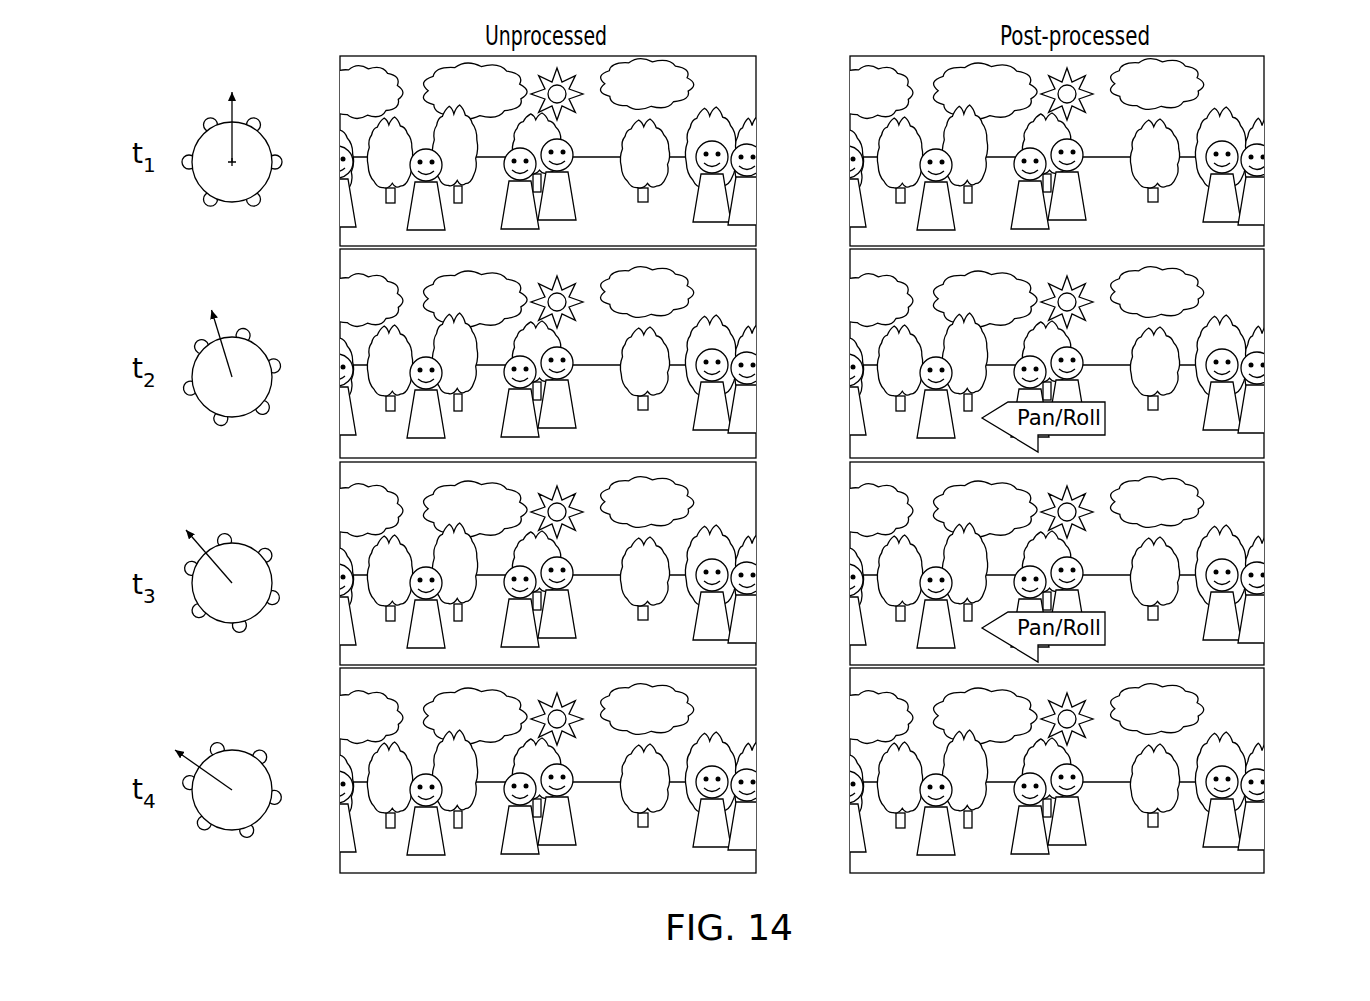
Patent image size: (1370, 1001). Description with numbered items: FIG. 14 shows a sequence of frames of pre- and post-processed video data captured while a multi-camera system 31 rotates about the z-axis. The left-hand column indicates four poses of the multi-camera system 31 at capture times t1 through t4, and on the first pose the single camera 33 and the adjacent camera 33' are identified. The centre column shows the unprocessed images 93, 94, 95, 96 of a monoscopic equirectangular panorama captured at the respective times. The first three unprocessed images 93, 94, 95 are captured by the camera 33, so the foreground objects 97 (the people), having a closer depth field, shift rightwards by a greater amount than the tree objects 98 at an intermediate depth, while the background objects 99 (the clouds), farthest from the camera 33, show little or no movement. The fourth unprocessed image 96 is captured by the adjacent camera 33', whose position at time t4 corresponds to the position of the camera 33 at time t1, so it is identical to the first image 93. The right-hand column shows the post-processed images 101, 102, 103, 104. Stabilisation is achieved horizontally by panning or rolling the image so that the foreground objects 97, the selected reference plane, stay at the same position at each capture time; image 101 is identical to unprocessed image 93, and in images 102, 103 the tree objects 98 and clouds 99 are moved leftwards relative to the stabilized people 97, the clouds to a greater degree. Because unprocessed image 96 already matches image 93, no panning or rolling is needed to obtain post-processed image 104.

The multi-camera system 31 is at (248, 177).
The camera 33 is at (267, 91).
The adjacent camera 33' is at (180, 95).
The unprocessed image 93 is at (759, 158).
The unprocessed image 94 is at (759, 365).
The unprocessed image 95 is at (759, 575).
The unprocessed image 96 is at (759, 782).
The foreground objects 97 is at (580, 186).
The tree objects 98 is at (618, 160).
The background objects 99 is at (672, 84).
The post-processed image 101 is at (1268, 158).
The post-processed image 102 is at (1268, 358).
The post-processed image 103 is at (1268, 566).
The post-processed image 104 is at (1268, 768).